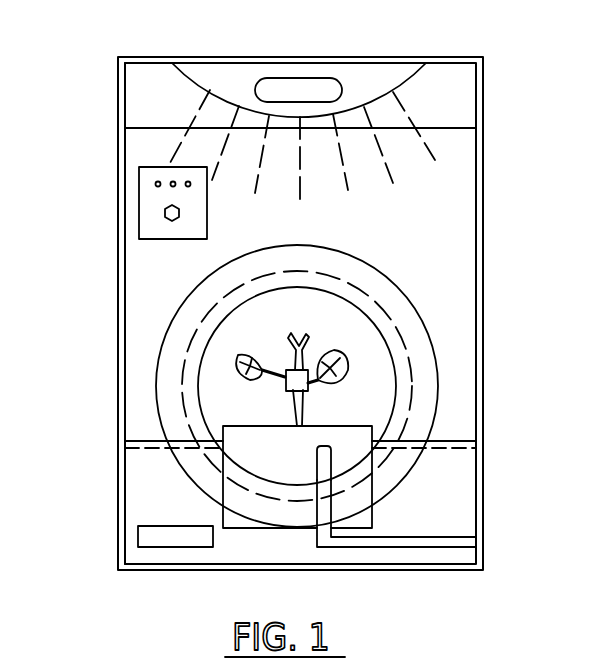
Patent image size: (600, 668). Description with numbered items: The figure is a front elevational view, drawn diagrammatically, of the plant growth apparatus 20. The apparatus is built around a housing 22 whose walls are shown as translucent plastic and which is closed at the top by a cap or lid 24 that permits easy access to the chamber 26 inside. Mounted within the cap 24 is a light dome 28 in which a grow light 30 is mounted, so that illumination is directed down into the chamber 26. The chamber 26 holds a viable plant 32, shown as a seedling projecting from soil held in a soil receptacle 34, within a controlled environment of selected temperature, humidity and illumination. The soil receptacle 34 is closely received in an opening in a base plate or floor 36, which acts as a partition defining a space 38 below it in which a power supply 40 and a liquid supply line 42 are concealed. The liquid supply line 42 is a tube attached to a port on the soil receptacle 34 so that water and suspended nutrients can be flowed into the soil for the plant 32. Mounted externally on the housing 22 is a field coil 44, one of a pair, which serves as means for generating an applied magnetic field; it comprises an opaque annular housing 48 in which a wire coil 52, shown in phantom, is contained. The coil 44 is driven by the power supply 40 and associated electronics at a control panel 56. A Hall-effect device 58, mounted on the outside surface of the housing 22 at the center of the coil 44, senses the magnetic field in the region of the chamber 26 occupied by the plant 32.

The plant growth apparatus 20 is at (87, 96).
The housing 22 is at (118, 260).
The cap or lid 24 is at (118, 59).
The chamber 26 is at (372, 225).
The light dome 28 is at (403, 87).
The grow light 30 is at (346, 77).
The plant or plant material 32 is at (308, 343).
The soil receptacle 34 is at (343, 430).
The base plate or floor 36 is at (118, 441).
The area or space 38 is at (118, 483).
The power supply 40 is at (162, 526).
The liquid supply line 42 is at (373, 557).
The field coil 44 is at (177, 307).
The annular housing 48 is at (407, 292).
The wire coil 52 is at (403, 338).
The control panel 56 is at (139, 197).
The Hall-effect device 58 is at (285, 370).